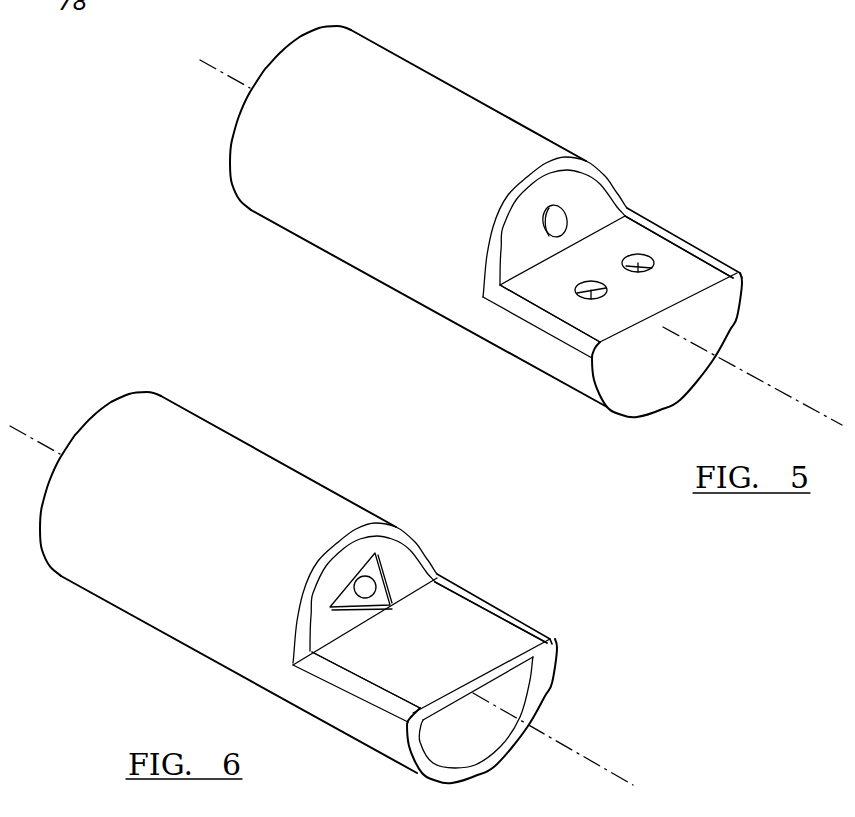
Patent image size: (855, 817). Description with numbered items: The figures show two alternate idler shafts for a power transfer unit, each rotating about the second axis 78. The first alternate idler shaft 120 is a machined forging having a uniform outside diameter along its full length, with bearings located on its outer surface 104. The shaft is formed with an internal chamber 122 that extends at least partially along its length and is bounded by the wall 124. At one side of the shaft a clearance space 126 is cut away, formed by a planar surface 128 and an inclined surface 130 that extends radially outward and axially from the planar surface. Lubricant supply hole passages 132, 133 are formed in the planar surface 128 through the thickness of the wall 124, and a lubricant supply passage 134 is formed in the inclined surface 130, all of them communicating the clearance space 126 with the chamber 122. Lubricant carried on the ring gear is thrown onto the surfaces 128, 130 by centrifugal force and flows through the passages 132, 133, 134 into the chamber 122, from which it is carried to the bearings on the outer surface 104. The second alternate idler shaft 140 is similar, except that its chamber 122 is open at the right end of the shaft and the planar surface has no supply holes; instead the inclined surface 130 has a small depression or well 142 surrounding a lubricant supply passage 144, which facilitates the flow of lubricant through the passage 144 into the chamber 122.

In FIG. 5, the second axis 78 is at (770, 382).
In FIG. 6, the second axis 78 is at (601, 764).
In FIG. 5, the outer surface 104 is at (453, 82).
In FIG. 6, the outer surface 104 is at (130, 616).
In FIG. 5, the alternate idler shaft 120 is at (597, 89).
In FIG. 6, the internal chamber 122 is at (517, 696).
In FIG. 5, the wall 124 is at (577, 291).
In FIG. 6, the wall 124 is at (417, 755).
In FIG. 5, the clearance space 126 is at (701, 236).
In FIG. 6, the clearance space 126 is at (528, 612).
In FIG. 5, the planar surface 128 is at (700, 273).
In FIG. 5, the inclined surface 130 is at (512, 258).
In FIG. 6, the inclined surface 130 is at (403, 578).
In FIG. 5, the lubricant supply hole passage 132 is at (598, 287).
In FIG. 6, the lubricant supply hole passage 132 is at (510, 643).
In FIG. 5, the lubricant supply hole passage 133 is at (641, 260).
In FIG. 5, the lubricant supply passage 134 is at (558, 218).
In FIG. 6, the alternate idler shaft 140 is at (114, 681).
In FIG. 6, the well 142 is at (385, 607).
In FIG. 6, the lubricant supply passage 144 is at (365, 598).